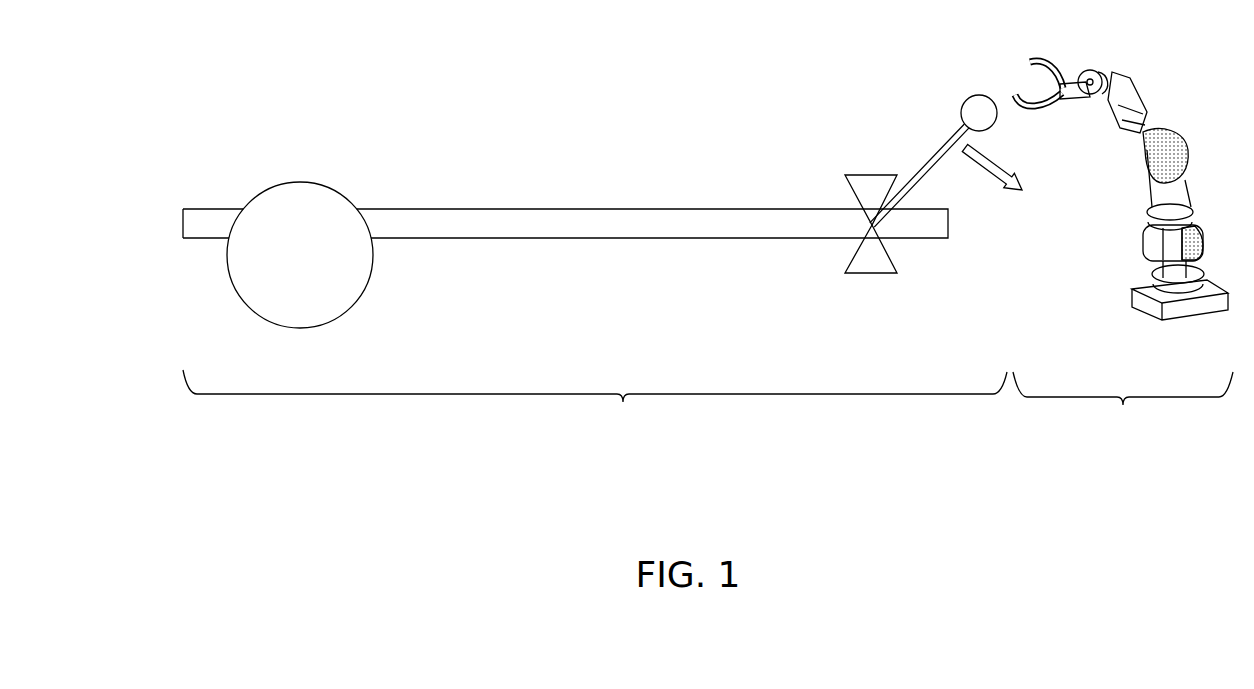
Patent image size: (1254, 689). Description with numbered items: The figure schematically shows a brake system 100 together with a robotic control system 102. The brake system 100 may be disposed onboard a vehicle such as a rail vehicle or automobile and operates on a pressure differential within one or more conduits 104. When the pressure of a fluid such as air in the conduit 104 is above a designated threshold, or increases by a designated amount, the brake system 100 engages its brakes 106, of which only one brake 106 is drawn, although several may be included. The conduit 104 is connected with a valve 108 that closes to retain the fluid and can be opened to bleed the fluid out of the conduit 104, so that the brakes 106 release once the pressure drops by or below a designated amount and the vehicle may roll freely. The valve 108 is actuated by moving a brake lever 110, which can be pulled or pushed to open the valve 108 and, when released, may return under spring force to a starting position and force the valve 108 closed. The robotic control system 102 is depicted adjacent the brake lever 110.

The brake system 100 is at (623, 400).
The robotic control system 102 is at (1123, 403).
The conduit 104 is at (642, 209).
The brake 106 is at (297, 181).
The valve 108 is at (872, 277).
The brake lever 110 is at (923, 160).